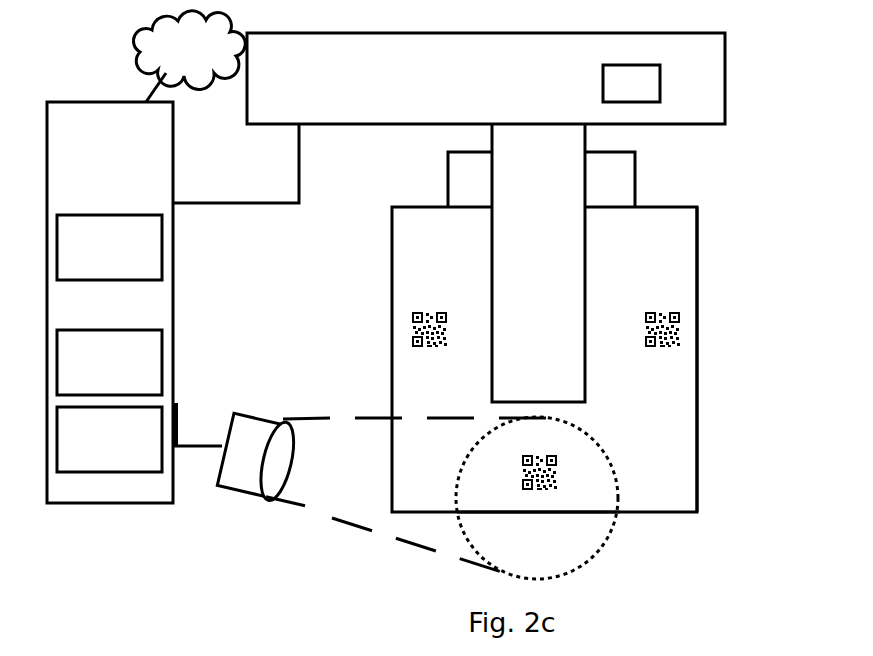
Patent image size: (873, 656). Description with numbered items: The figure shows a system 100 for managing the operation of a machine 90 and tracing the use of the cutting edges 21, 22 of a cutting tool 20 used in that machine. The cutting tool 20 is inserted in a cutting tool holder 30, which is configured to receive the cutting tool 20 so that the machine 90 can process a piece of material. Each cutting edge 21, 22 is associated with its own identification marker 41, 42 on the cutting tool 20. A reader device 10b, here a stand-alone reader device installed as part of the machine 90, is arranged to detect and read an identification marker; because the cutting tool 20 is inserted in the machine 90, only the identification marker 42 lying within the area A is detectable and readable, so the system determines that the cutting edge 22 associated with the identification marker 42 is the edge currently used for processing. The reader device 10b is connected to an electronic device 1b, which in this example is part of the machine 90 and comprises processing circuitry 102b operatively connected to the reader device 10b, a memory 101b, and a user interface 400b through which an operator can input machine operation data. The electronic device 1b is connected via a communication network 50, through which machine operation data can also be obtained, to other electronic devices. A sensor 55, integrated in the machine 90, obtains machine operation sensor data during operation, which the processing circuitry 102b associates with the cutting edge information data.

The system 100 is at (100, 40).
The communication network 50 is at (189, 56).
The electronic device 1b is at (173, 302).
The user interface 400b is at (109, 247).
The processing circuitry 102b is at (109, 362).
The memory 101b is at (109, 439).
The machine 90 is at (486, 78).
The sensor 55 is at (631, 83).
The cutting tool holder 30 is at (541, 263).
The cutting tool 20 is at (622, 283).
The cutting edge 21 is at (713, 286).
The identification marker 41 is at (675, 359).
The identification marker 42 is at (579, 481).
The cutting edge 22 is at (559, 520).
The area A is at (537, 498).
The reader device 10b is at (233, 506).